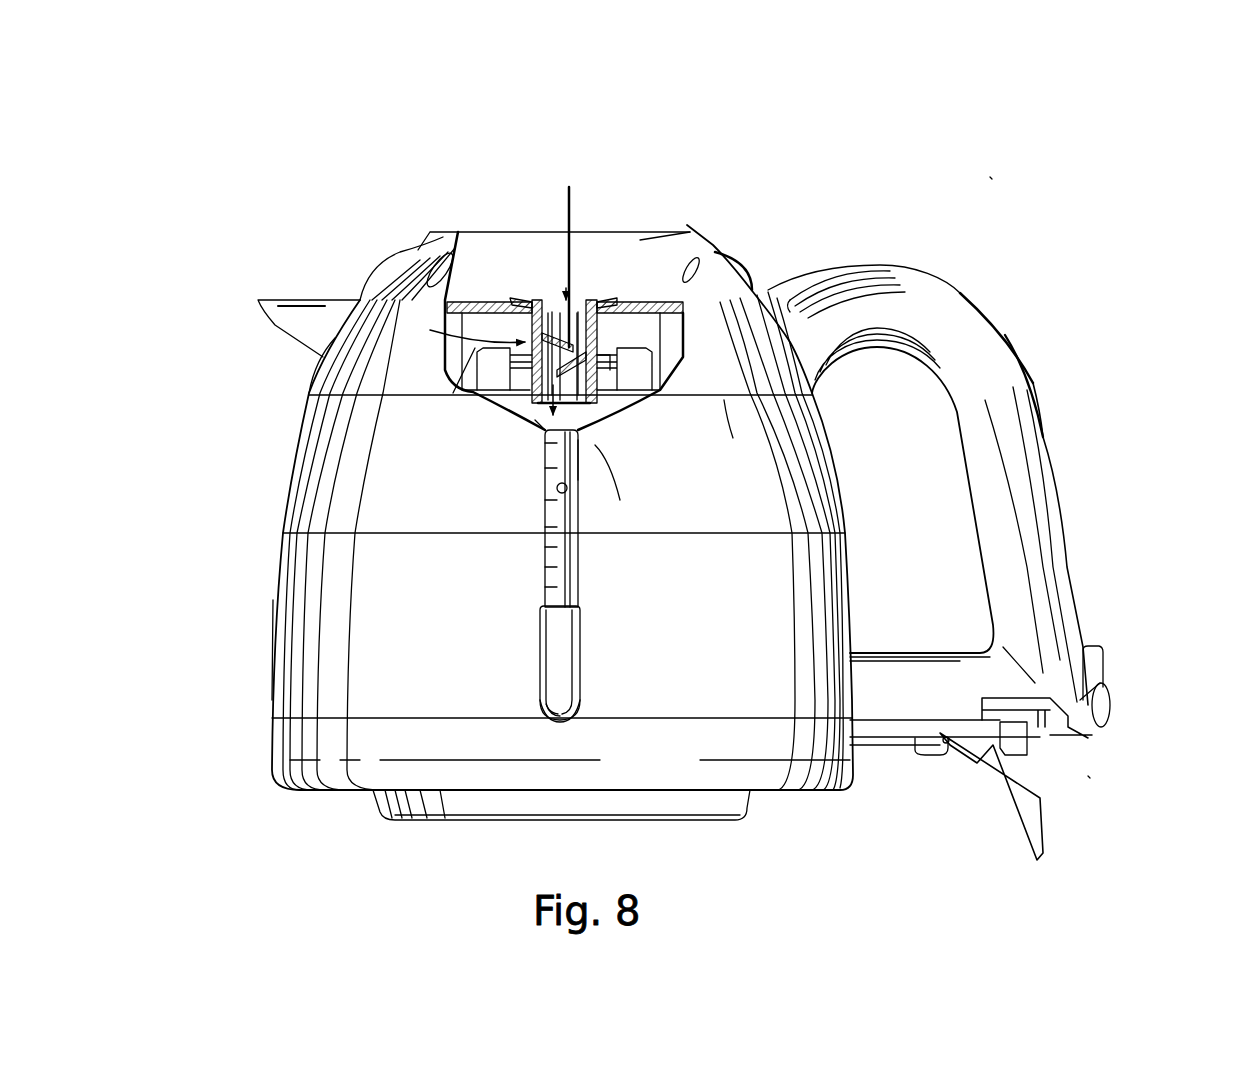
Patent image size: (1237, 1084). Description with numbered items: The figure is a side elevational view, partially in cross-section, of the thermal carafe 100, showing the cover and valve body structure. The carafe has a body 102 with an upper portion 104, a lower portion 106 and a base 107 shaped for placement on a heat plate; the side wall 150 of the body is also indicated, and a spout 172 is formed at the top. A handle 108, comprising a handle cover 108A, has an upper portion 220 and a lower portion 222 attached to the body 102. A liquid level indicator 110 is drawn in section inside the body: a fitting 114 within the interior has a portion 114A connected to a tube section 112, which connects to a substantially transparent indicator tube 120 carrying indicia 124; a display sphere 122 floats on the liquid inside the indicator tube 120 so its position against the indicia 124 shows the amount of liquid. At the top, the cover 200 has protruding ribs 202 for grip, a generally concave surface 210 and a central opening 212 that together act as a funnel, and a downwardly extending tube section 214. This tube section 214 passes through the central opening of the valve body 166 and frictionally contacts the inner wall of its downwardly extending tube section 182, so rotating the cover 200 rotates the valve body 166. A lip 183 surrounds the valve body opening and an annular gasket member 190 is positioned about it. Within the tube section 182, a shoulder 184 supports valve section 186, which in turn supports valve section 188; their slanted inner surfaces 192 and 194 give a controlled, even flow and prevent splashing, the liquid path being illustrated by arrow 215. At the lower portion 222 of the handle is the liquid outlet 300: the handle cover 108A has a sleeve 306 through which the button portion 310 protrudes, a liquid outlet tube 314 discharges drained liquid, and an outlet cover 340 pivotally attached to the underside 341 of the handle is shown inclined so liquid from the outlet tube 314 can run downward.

The thermal carafe 100 is at (993, 177).
The body 102 is at (275, 540).
The upper portion 104 is at (310, 378).
The lower portion 106 is at (272, 718).
The base 107 is at (370, 797).
The handle 108 is at (958, 290).
The handle cover 108A is at (1040, 367).
The liquid level indicator 110 is at (580, 560).
The tube section 112 is at (580, 630).
The fitting 114 is at (580, 710).
The portion 114A is at (545, 705).
The indicator tube 120 is at (580, 462).
The display sphere 122 is at (567, 492).
The indicia 124 is at (545, 500).
The side wall 150 is at (275, 625).
The valve body 166 is at (648, 300).
The spout 172 is at (283, 300).
The tube section 182 is at (440, 303).
The lip 183 is at (515, 300).
The shoulder 184 is at (535, 415).
The valve section 186 is at (600, 440).
The valve section 188 is at (566, 255).
The annular gasket member 190 is at (625, 300).
The slanted inner surface 192 is at (600, 412).
The slanted inner surface 194 is at (540, 300).
The cover 200 is at (688, 232).
The protruding ribs 202 is at (432, 262).
The concave surface 210 is at (612, 300).
The central opening 212 is at (600, 300).
The tube section 214 is at (540, 300).
The arrow 215 is at (573, 250).
The upper portion 220 is at (795, 300).
The lower portion 222 is at (898, 655).
The liquid outlet 300 is at (1090, 778).
The sleeve 306 is at (1090, 740).
The button portion 310 is at (1112, 703).
The liquid outlet tube 314 is at (1055, 770).
The outlet cover 340 is at (990, 805).
The underside 341 is at (903, 745).